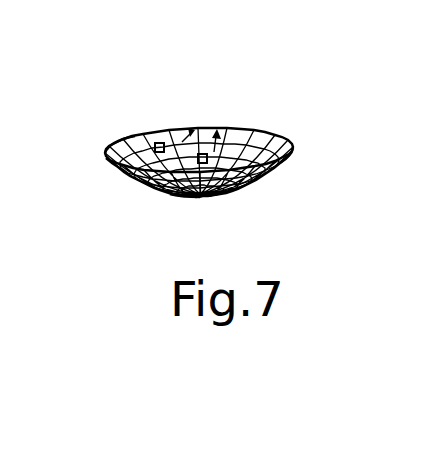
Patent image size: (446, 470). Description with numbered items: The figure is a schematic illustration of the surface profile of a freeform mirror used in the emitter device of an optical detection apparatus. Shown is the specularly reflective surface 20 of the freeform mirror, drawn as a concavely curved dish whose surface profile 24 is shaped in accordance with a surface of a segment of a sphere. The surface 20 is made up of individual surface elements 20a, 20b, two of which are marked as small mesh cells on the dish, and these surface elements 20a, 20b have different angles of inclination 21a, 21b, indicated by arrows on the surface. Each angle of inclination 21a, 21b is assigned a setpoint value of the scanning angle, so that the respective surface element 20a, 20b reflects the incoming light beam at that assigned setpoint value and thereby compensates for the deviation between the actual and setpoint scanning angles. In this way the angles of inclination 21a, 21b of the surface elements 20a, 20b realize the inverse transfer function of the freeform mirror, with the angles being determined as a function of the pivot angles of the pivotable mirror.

The specularly reflective surface 20 is at (240, 93).
The surface element 20a is at (111, 138).
The surface element 20b is at (184, 195).
The angle of inclination 21a is at (168, 140).
The angle of inclination 21b is at (232, 136).
The surface profile 24 is at (293, 152).